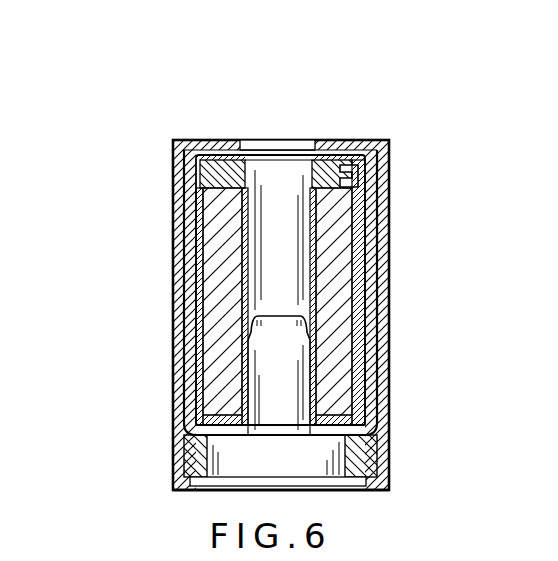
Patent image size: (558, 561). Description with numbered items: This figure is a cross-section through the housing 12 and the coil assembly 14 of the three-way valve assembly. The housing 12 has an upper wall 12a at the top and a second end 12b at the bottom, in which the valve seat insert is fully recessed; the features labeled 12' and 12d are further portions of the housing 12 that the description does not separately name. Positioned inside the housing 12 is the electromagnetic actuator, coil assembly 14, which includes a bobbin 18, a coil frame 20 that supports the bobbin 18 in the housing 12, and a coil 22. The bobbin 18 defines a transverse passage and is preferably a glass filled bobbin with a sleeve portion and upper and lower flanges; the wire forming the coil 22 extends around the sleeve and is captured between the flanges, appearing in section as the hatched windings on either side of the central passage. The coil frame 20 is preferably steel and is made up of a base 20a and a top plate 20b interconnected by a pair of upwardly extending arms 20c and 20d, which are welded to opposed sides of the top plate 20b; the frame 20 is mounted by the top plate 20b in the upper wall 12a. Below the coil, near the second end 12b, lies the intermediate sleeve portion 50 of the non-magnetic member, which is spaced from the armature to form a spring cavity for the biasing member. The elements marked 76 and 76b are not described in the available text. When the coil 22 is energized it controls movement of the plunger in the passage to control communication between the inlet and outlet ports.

The housing 12 is at (272, 266).
The upper wall 12a is at (212, 140).
The housing cover 12' is at (286, 77).
The second end 12b is at (374, 492).
The pole piece block 12d is at (197, 209).
The coil frame 20 is at (390, 232).
The base 20a is at (178, 460).
The top plate 20b is at (357, 140).
The arm 20c is at (189, 322).
The arm 20d is at (388, 290).
The coil 22 is at (195, 245).
The coil assembly 14 is at (356, 348).
The bobbin 18 is at (344, 391).
The spring 76 is at (380, 461).
The spring seat 76b is at (352, 392).
The intermediate sleeve portion 50 is at (390, 477).